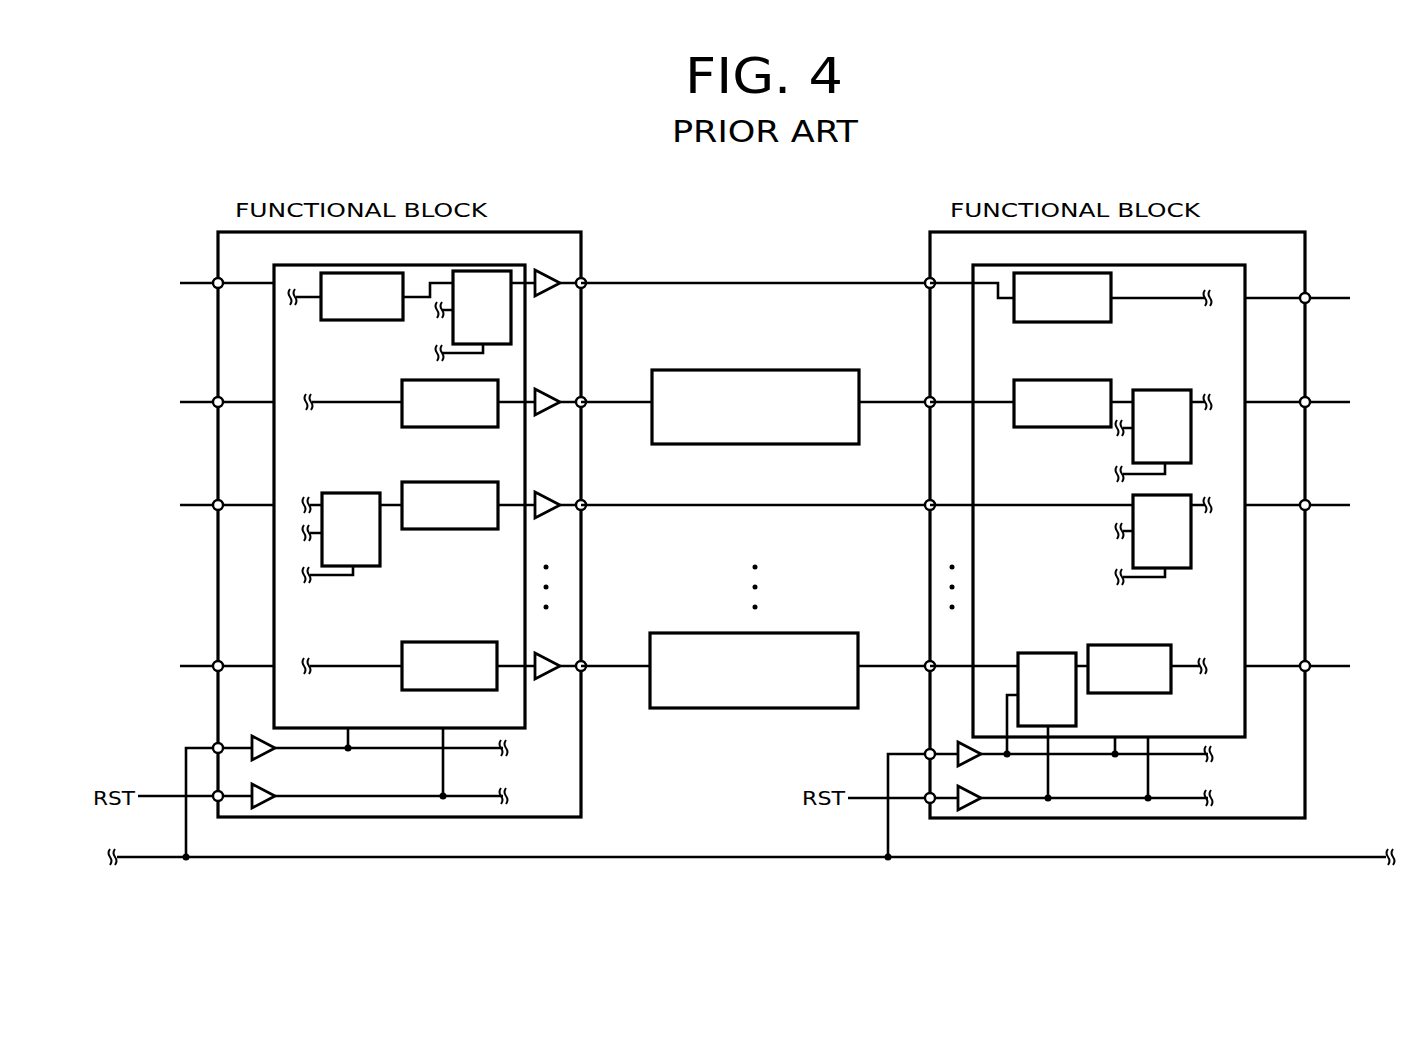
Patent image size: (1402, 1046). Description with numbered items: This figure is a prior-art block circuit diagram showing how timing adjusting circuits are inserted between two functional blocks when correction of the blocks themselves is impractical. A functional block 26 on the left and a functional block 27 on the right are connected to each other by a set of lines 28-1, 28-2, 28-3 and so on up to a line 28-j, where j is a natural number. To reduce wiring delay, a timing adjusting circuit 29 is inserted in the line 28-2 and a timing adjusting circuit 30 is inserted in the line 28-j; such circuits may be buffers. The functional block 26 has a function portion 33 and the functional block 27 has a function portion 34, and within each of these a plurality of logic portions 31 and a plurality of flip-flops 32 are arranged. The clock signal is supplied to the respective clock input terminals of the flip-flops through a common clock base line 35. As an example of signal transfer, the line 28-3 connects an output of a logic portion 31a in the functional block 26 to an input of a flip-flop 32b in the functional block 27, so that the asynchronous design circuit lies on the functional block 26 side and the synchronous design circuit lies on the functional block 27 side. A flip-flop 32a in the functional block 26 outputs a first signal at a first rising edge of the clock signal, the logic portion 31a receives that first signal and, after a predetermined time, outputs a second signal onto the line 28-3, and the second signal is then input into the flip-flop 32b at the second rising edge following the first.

The functional block 26 is at (521, 231).
The functional block 27 is at (1224, 232).
The line 28-1 is at (633, 283).
The line 28-2 is at (617, 402).
The line 28-3 is at (633, 505).
The line 28-j is at (617, 666).
The timing adjusting circuit 29 is at (828, 370).
The timing adjusting circuit 30 is at (826, 633).
The logic portion 31 is at (358, 321).
The logic portion 31a is at (449, 530).
The flip-flop 32 is at (511, 321).
The flip-flop 32a is at (372, 567).
The flip-flop 32b is at (1185, 569).
The function portion 33 is at (273, 272).
The function portion 34 is at (973, 270).
The common clock base line 35 is at (660, 858).